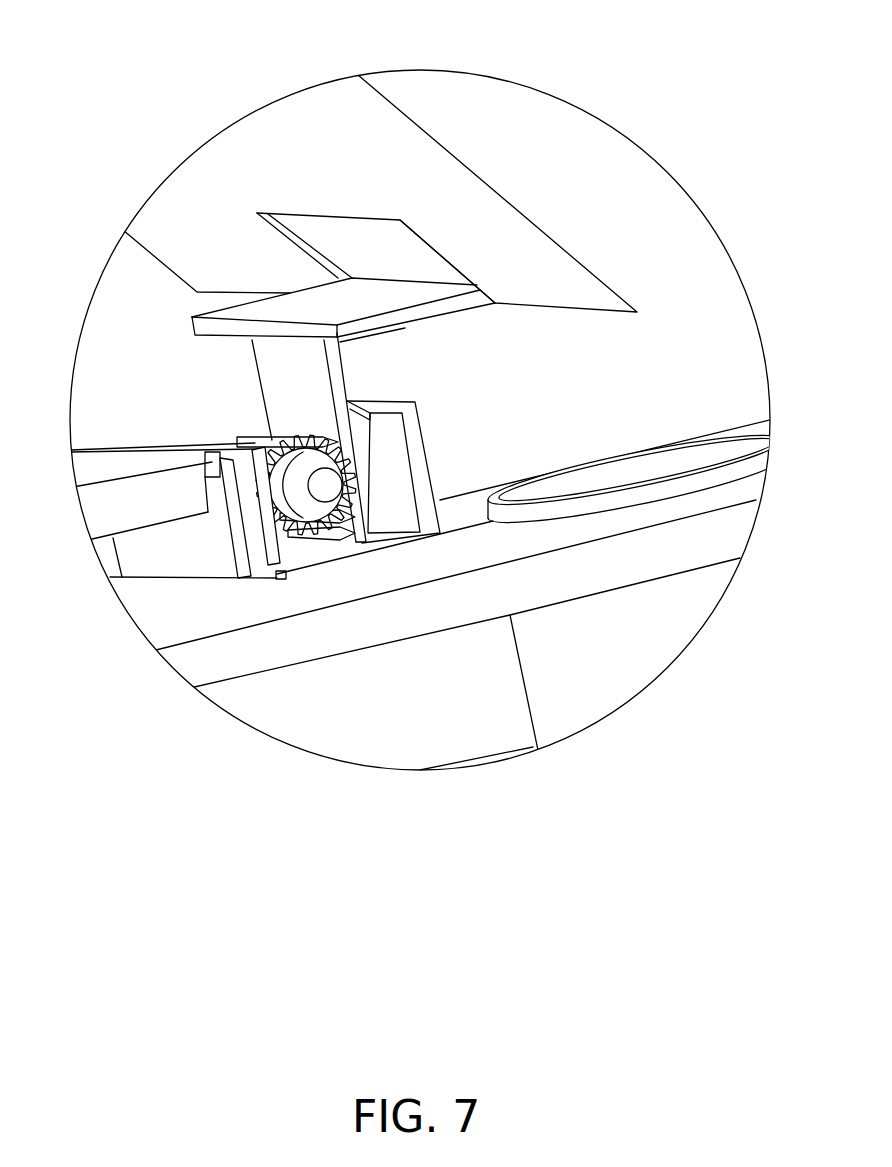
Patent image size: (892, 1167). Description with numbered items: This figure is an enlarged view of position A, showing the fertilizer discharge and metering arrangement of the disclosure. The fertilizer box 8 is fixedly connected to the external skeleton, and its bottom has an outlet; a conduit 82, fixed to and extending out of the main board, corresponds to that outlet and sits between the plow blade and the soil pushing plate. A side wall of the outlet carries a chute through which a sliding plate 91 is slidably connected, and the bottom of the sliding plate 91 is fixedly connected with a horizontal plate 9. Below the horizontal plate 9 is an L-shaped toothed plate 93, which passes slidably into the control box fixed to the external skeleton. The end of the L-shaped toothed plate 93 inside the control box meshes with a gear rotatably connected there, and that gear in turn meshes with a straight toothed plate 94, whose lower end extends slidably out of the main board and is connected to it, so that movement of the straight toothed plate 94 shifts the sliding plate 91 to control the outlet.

The fertilizer box 8 is at (507, 152).
The conduit 82 is at (606, 496).
The horizontal plate 9 is at (310, 307).
The sliding plate 91 is at (373, 258).
The L-shaped toothed plate 93 is at (313, 379).
The straight toothed plate 94 is at (252, 490).
The position A is at (692, 183).